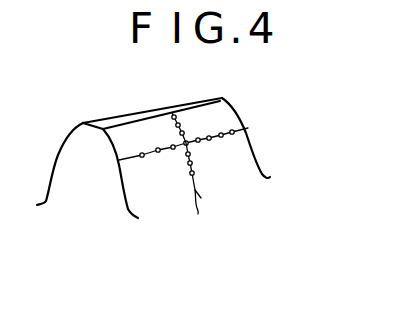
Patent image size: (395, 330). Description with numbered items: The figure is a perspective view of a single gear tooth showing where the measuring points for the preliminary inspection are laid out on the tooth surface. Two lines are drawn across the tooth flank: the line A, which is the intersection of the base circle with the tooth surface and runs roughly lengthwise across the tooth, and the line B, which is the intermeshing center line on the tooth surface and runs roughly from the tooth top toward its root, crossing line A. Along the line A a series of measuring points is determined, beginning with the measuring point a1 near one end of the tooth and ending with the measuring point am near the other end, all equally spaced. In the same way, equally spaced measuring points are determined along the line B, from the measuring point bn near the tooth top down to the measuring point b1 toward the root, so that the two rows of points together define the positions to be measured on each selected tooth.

The line A is at (258, 126).
The line B is at (189, 178).
The measuring point a1 is at (143, 154).
The measuring point am is at (234, 131).
The measuring point b1 is at (193, 175).
The measuring point bn is at (180, 117).